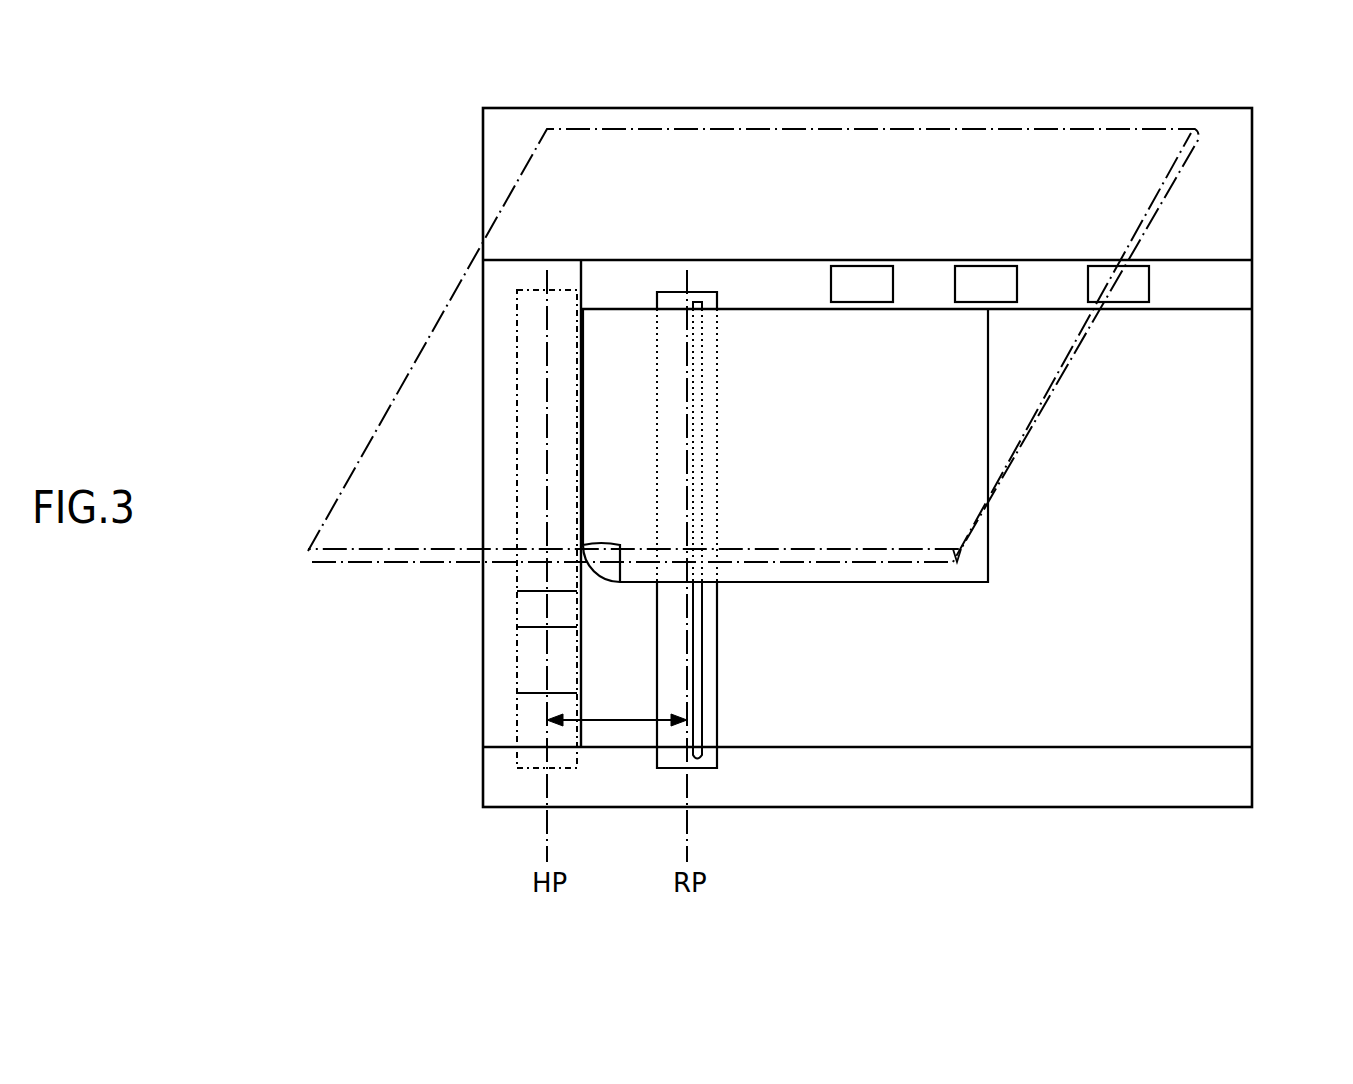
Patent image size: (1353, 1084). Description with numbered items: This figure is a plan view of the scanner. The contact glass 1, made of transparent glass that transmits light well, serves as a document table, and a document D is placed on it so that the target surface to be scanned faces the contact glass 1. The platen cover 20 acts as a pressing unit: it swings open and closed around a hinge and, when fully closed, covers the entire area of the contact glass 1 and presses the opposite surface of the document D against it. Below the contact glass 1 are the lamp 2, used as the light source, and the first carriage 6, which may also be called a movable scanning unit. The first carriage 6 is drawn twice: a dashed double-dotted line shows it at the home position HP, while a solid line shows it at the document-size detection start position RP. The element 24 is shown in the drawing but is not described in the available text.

The contact glass 1 is at (1235, 540).
The maintenance unit / band with cap units 24 is at (1235, 282).
The document D is at (870, 582).
The platen cover 20 is at (418, 380).
The first carriage 6 is at (517, 483).
The lamp 2 is at (703, 768).